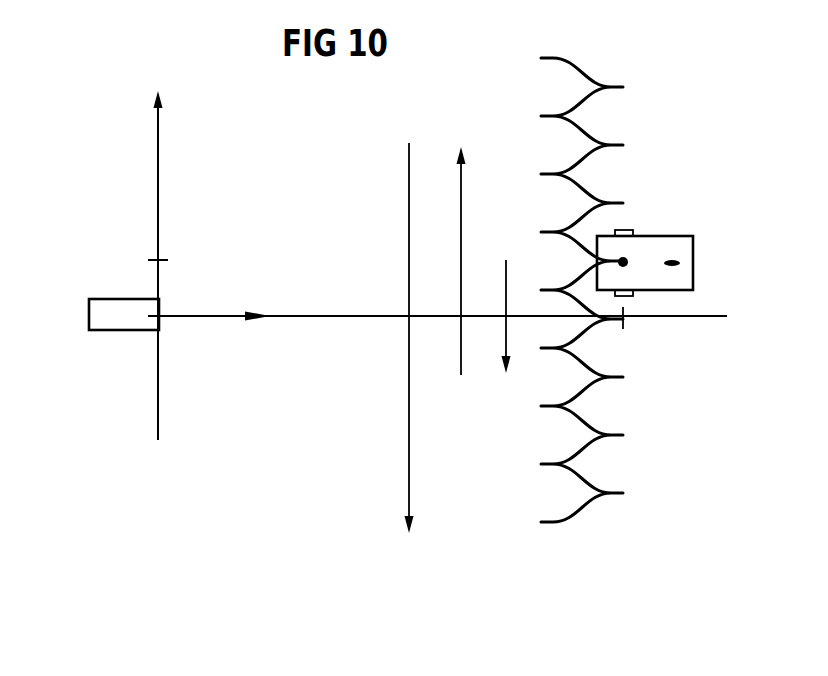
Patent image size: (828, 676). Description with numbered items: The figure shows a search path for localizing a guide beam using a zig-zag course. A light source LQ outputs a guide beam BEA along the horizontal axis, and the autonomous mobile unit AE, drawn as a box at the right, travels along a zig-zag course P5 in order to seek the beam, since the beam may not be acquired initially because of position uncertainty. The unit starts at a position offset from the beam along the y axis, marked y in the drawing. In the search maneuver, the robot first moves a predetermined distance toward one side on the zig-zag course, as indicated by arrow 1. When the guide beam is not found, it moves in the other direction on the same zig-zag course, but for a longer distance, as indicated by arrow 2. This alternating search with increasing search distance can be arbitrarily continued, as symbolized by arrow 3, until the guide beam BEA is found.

The light source LQ is at (120, 323).
The guide beam BEA is at (205, 319).
The zig-zag course P5 is at (577, 68).
The autonomous mobile unit AE is at (677, 245).
The arrow 1 is at (495, 337).
The arrow 2 is at (480, 247).
The arrow 3 is at (427, 346).
The y axis y is at (152, 264).